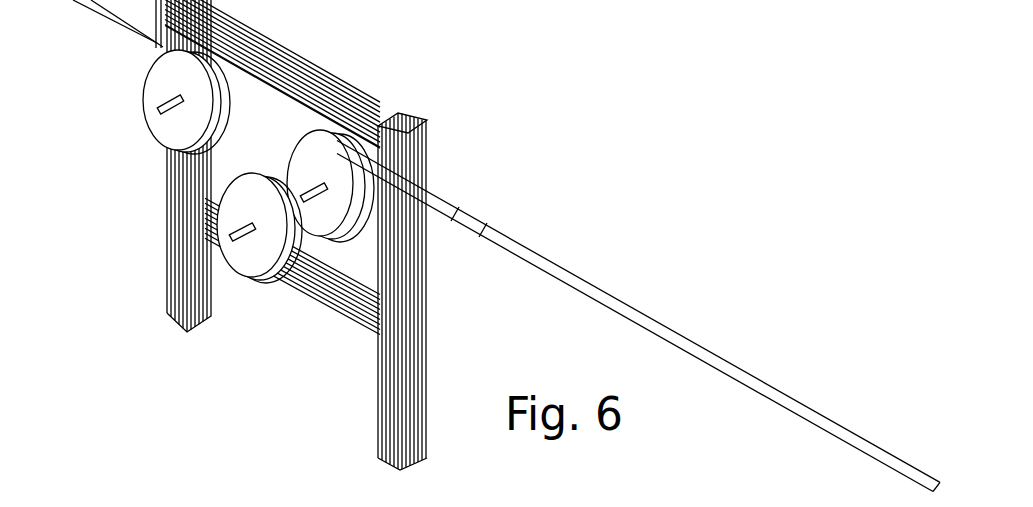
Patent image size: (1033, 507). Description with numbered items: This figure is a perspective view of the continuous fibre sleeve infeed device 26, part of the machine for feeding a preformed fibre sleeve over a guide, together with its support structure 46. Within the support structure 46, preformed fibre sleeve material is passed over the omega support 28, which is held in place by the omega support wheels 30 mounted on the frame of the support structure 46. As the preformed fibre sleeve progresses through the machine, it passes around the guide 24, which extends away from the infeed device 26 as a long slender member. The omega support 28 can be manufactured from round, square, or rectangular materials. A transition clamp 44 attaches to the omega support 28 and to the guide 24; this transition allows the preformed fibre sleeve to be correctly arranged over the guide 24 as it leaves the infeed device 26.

The guide 24 is at (797, 405).
The continuous fibre sleeve infeed device 26 is at (492, 246).
The omega support 28 is at (122, 27).
The omega support wheels 30 is at (231, 237).
The transition clamp 44 is at (473, 216).
The support structure 46 is at (393, 102).